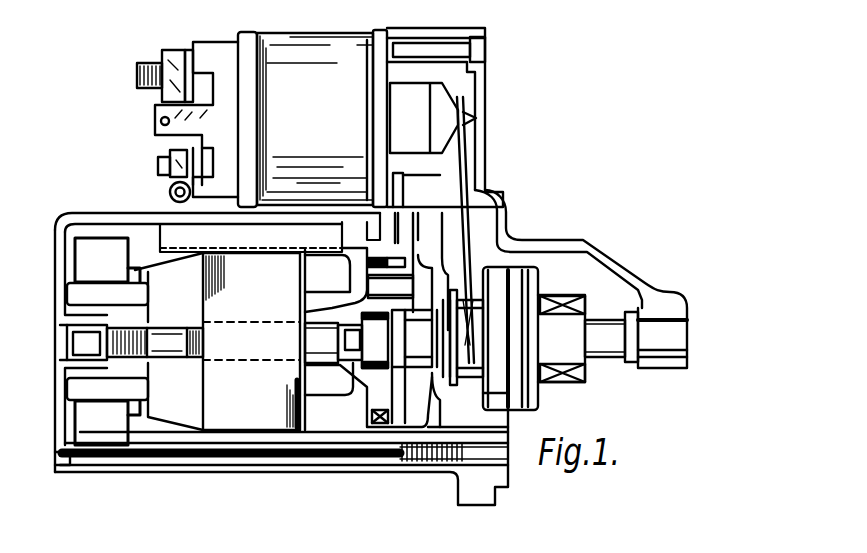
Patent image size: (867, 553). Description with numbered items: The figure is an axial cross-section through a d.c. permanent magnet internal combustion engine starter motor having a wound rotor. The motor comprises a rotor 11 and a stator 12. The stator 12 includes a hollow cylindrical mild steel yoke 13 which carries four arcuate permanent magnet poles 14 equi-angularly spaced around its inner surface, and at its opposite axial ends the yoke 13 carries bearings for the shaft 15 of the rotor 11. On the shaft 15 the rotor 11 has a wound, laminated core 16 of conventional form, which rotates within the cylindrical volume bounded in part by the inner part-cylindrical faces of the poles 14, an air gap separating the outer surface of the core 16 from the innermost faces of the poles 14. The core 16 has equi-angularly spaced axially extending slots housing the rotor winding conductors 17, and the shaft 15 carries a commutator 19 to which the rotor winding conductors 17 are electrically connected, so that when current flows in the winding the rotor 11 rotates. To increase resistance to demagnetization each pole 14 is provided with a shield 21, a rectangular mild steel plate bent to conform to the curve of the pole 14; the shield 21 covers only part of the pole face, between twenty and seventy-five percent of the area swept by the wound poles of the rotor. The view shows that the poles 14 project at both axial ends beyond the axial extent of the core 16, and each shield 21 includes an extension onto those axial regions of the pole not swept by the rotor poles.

The rotor 11 is at (219, 411).
The stator 12 is at (87, 475).
The yoke 13 is at (333, 466).
The permanent magnet poles 14 is at (187, 238).
The shaft 15 is at (330, 342).
The core 16 is at (225, 423).
The rotor winding conductors 17 is at (327, 413).
The commutator 19 is at (122, 380).
The shield 21 is at (147, 268).